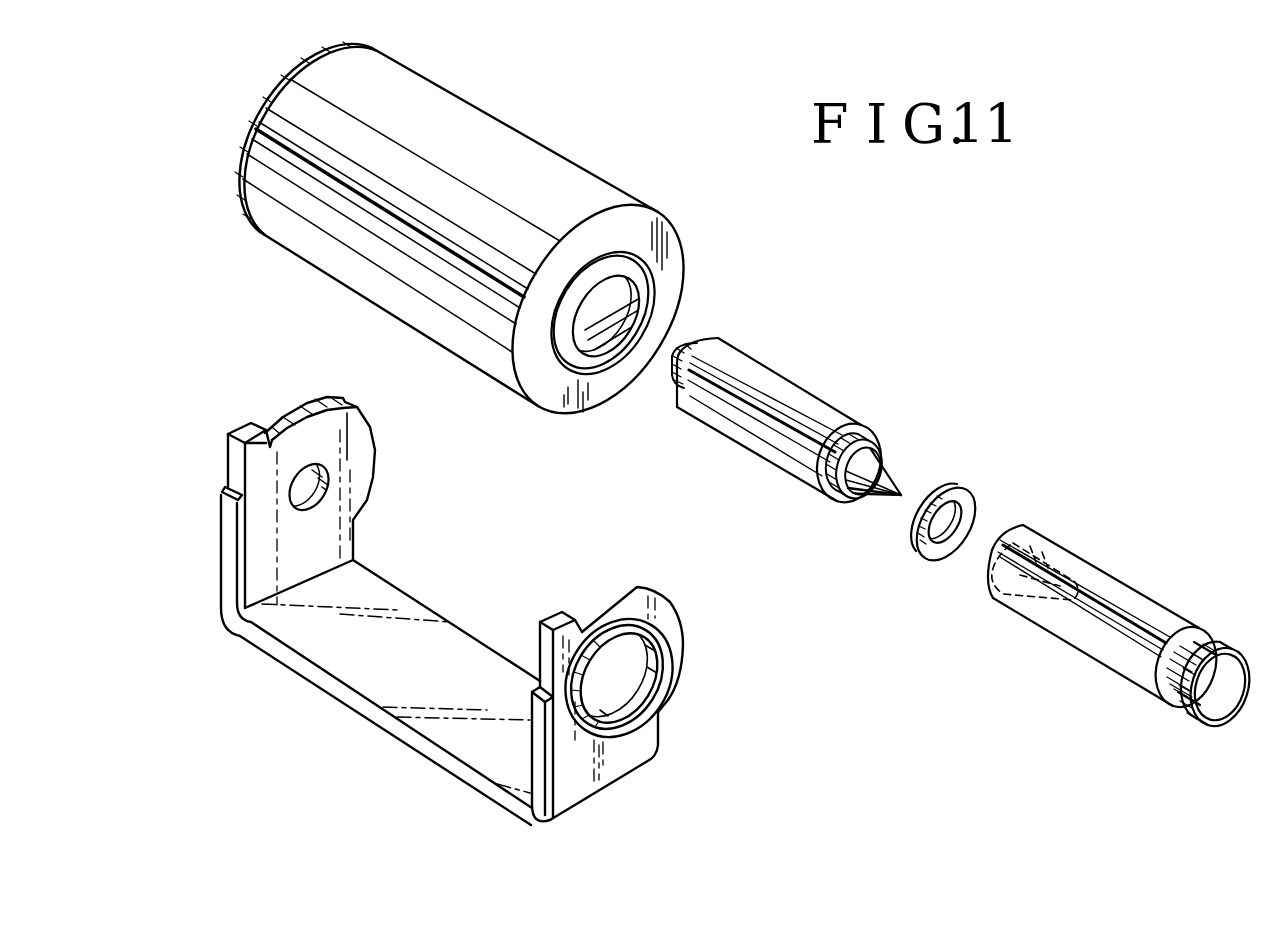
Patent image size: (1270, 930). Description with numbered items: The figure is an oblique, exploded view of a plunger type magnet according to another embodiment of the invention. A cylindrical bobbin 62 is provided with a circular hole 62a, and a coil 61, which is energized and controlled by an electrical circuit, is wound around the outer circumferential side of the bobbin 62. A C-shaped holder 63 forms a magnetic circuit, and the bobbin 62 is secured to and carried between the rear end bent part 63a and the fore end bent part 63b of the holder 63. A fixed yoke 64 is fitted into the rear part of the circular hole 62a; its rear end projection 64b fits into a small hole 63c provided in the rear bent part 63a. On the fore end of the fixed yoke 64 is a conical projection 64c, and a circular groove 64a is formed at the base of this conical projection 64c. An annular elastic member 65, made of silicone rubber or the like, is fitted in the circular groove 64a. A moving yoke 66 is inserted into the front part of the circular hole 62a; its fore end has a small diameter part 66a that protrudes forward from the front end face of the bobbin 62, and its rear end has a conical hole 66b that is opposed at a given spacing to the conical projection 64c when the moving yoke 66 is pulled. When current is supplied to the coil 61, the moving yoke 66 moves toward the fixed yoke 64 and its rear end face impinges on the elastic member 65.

The coil 61 is at (513, 158).
The cylindrical bobbin 62 is at (632, 233).
The circular hole 62a is at (624, 311).
The C-shaped holder 63 is at (372, 672).
The rear end bent part 63a is at (253, 555).
The fore end bent part 63b is at (643, 738).
The small hole 63c is at (298, 470).
The fixed yoke 64 is at (775, 393).
The circular groove 64a is at (840, 436).
The rear end projection 64b is at (673, 388).
The conical projection 64c is at (865, 497).
The elastic member 65 is at (955, 484).
The moving yoke 66 is at (1115, 585).
The small diameter part 66a is at (1200, 640).
The conical hole 66b is at (1031, 526).